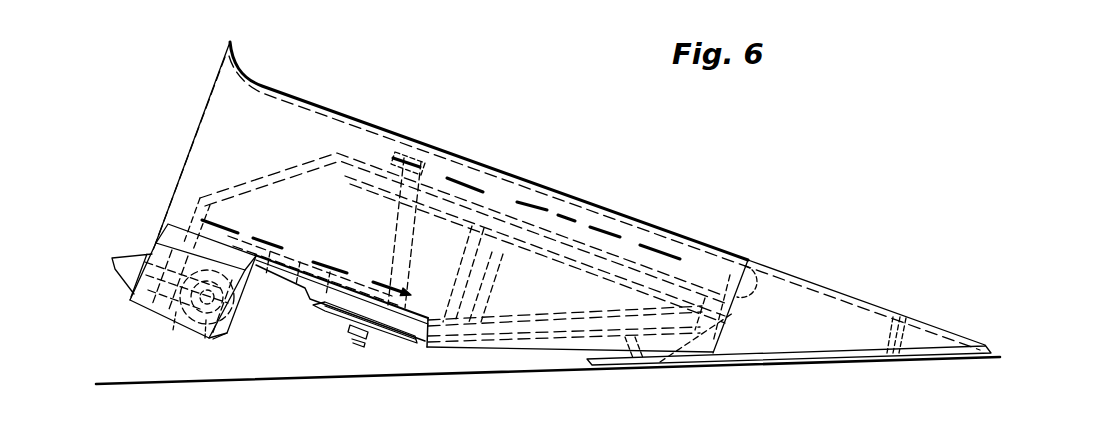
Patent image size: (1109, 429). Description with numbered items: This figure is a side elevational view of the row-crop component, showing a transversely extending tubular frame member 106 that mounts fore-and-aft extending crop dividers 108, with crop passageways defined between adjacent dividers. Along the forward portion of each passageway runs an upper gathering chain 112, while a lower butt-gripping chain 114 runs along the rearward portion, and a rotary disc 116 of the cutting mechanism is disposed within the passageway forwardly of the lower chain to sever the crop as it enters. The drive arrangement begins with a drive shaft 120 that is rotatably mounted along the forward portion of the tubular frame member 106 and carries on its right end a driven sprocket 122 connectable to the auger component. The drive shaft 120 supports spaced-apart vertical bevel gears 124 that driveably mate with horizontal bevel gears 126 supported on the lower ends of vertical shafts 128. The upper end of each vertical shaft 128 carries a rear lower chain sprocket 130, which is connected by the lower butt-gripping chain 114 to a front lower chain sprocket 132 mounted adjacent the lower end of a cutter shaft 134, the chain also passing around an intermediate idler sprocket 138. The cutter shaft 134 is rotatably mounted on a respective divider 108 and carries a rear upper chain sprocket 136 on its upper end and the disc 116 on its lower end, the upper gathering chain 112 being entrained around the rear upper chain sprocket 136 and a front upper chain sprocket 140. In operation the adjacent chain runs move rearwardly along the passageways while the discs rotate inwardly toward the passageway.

The tubular frame member 106 is at (136, 295).
The crop divider 108 is at (819, 284).
The upper gathering chain 112 is at (525, 200).
The lower butt-gripping chain 114 is at (270, 232).
The rotary disc 116 is at (393, 343).
The drive shaft 120 is at (205, 340).
The driven sprocket 122 is at (228, 334).
The vertical bevel gear 124 is at (181, 325).
The horizontal bevel gear 126 is at (243, 292).
The vertical shaft 128 is at (190, 220).
The rear lower chain sprocket 130 is at (213, 228).
The front lower chain sprocket 132 is at (398, 268).
The cutter shaft 134 is at (405, 240).
The rear upper chain sprocket 136 is at (441, 170).
The intermediate idler sprocket 138 is at (315, 255).
The front upper chain sprocket 140 is at (708, 258).